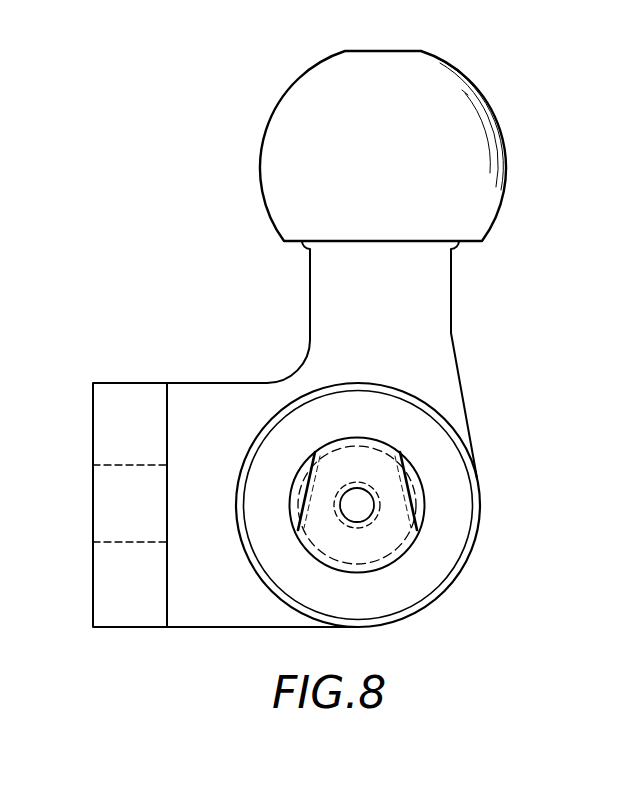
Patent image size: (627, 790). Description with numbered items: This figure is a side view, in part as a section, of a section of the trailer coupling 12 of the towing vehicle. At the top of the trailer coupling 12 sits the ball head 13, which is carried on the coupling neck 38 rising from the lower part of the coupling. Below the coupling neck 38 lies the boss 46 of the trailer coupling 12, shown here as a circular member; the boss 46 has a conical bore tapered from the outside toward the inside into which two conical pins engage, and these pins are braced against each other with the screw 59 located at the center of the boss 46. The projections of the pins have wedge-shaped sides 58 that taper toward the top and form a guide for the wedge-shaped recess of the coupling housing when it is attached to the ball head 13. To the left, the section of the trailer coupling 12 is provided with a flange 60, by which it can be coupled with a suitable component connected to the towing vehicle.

The trailer coupling 12 is at (318, 371).
The ball head 13 is at (478, 90).
The coupling neck 38 is at (440, 293).
The boss 46 is at (432, 412).
The wedge-shaped sides 58 is at (290, 473).
The screw 59 is at (354, 488).
The flange 60 is at (132, 612).